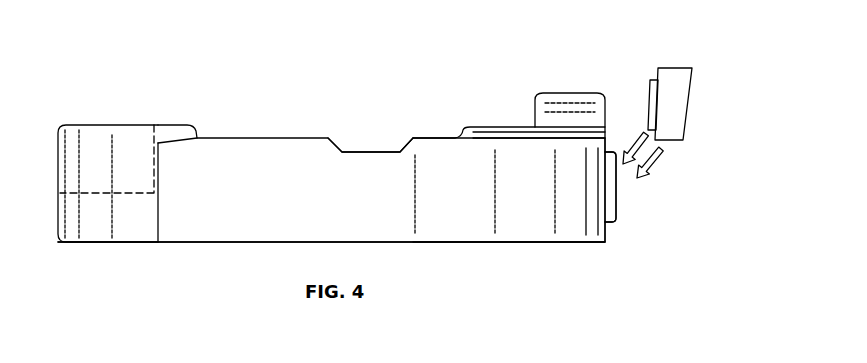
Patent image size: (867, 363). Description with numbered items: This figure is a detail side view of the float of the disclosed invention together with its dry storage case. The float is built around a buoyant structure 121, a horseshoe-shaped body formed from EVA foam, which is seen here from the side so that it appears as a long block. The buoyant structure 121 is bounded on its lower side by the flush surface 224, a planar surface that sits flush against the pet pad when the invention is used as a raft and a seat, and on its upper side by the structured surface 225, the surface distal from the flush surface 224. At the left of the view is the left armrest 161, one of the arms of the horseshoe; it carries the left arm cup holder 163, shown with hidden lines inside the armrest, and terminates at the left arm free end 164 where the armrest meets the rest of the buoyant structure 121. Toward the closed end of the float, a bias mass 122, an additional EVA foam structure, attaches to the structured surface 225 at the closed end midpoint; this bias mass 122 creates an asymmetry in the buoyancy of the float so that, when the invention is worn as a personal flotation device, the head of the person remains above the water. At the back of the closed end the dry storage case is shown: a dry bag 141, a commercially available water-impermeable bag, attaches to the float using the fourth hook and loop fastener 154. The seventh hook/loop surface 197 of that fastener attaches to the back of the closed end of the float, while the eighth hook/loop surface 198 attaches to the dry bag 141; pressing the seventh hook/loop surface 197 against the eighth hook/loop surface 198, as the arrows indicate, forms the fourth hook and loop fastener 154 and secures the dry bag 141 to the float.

The left armrest 161 is at (225, 170).
The left arm cup holder 163 is at (120, 212).
The left arm free end 164 is at (163, 232).
The flush surface 224 is at (253, 244).
The structured surface 225 is at (308, 135).
The buoyant structure 121 is at (388, 215).
The bias mass 122 is at (550, 115).
The fourth hook and loop fastener 154 is at (643, 90).
The seventh hook/loop surface 197 is at (617, 203).
The dry bag 141 is at (668, 80).
The eighth hook/loop surface 198 is at (655, 117).